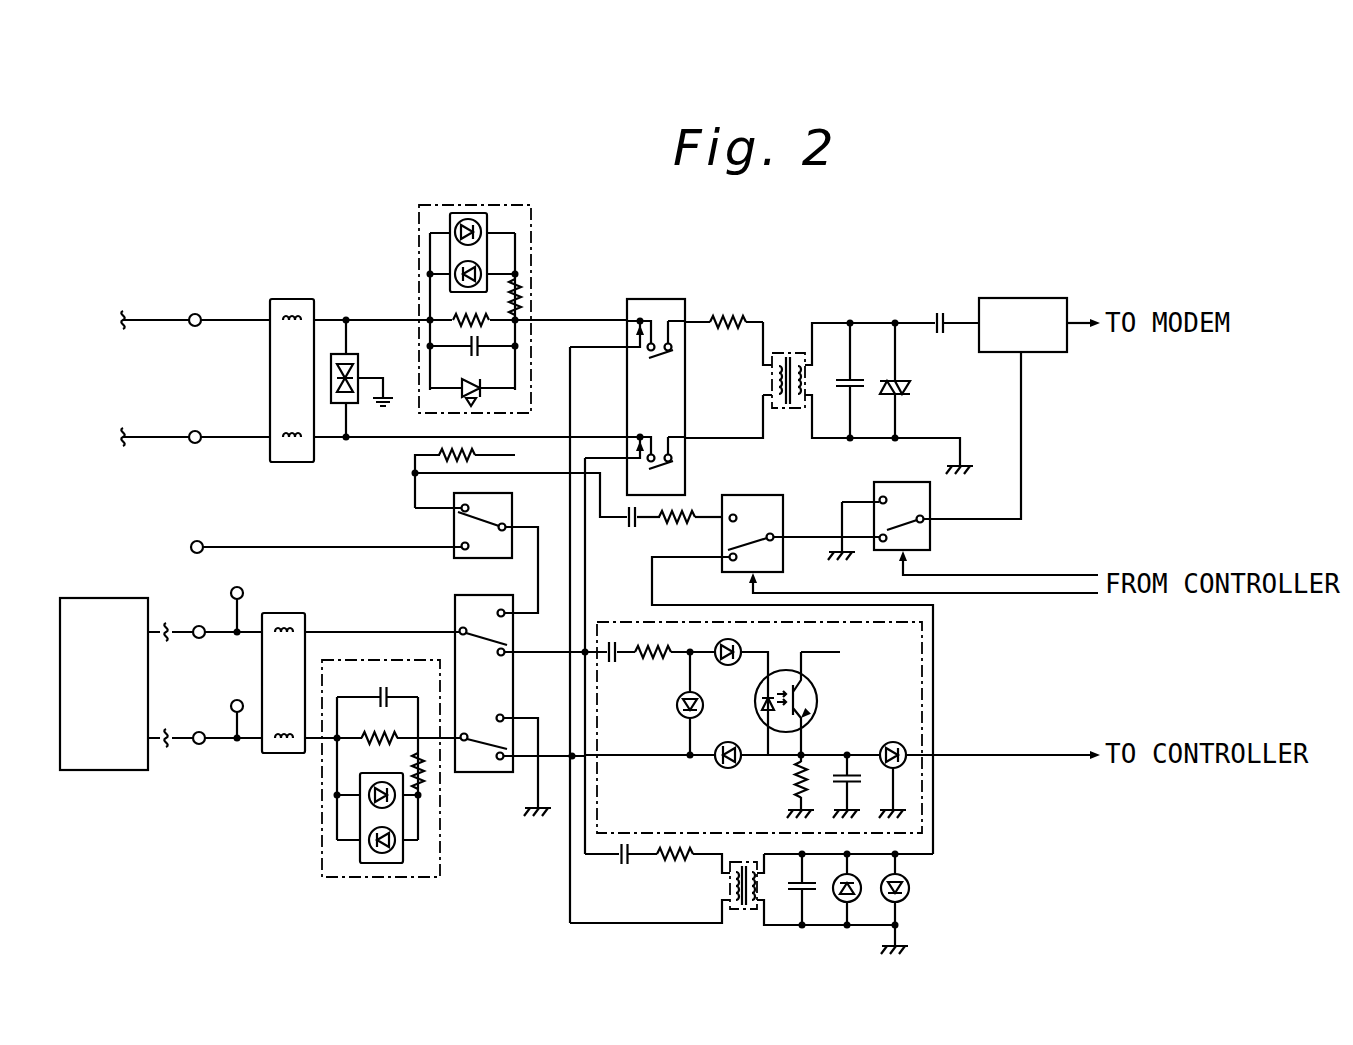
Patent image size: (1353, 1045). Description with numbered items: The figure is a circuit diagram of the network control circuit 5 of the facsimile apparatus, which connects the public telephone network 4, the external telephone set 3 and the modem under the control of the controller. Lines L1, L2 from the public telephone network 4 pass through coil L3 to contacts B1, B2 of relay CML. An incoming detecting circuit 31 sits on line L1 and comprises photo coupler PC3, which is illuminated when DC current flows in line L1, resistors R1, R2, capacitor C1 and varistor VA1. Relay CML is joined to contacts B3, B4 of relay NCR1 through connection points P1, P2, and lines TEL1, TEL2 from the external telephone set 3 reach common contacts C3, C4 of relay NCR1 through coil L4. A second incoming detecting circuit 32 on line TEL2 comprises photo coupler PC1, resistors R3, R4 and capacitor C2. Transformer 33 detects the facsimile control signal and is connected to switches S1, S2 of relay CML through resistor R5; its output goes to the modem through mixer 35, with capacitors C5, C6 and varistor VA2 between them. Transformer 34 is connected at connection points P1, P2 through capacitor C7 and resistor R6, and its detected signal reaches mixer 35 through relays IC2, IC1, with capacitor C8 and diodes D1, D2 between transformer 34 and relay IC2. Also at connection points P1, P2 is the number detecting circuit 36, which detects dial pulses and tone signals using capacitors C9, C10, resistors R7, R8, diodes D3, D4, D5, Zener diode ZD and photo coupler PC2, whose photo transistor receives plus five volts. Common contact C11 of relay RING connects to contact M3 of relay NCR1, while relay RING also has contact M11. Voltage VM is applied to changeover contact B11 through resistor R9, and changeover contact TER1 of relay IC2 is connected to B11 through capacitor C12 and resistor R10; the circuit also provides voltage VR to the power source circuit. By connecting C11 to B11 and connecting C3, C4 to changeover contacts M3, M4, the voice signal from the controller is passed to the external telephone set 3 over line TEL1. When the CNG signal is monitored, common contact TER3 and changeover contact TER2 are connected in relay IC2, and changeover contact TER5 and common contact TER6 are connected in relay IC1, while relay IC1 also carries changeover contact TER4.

The external telephone set 3 is at (120, 598).
The public telephone network 4 is at (142, 322).
The network control circuit 5 is at (946, 280).
The incoming detecting circuit 31 is at (482, 308).
The incoming detecting circuit 32 is at (377, 768).
The transformer 33 is at (790, 354).
The transformer 34 is at (738, 905).
The mixer 35 is at (1047, 298).
The number detecting circuit 36 is at (842, 727).
The line L1 is at (228, 318).
The line L2 is at (228, 435).
The coil L3 is at (293, 298).
The coil L4 is at (294, 613).
The resistor R1 is at (455, 316).
The resistor R2 is at (518, 301).
The resistor R3 is at (379, 744).
The resistor R4 is at (423, 780).
The resistor R5 is at (738, 318).
The resistor R6 is at (675, 860).
The resistor R7 is at (665, 662).
The resistor R8 is at (798, 780).
The resistor R9 is at (440, 455).
The resistor R10 is at (688, 525).
The capacitor C1 is at (482, 344).
The capacitor C2 is at (378, 691).
The common contact C3 is at (459, 630).
The common contact C4 is at (466, 733).
The capacitor C5 is at (856, 378).
The capacitor C6 is at (935, 318).
The capacitor C7 is at (620, 862).
The capacitor C8 is at (800, 895).
The capacitor C9 is at (617, 660).
The capacitor C10 is at (843, 770).
The common contact C11 is at (508, 526).
The capacitor C12 is at (630, 526).
The photo coupler PC1 is at (401, 857).
The photo coupler PC2 is at (813, 698).
The photo coupler PC3 is at (450, 218).
The varistor VA1 is at (465, 385).
The varistor VA2 is at (902, 381).
The relay CML is at (682, 300).
The contact B1 is at (640, 315).
The contact B2 is at (642, 433).
The contact B3 is at (500, 656).
The contact B4 is at (501, 760).
The changeover contact B11 is at (470, 507).
The changeover contact M3 is at (503, 609).
The changeover contact M4 is at (506, 714).
The contact M11 is at (461, 546).
The switch S1 is at (668, 356).
The switch S2 is at (669, 468).
The voltage VM is at (538, 455).
The relay RING is at (455, 512).
The voltage VR is at (179, 546).
The relay NCR1 is at (460, 602).
The line TEL1 is at (213, 630).
The line TEL2 is at (213, 736).
The connection point P1 is at (582, 650).
The connection point P2 is at (570, 752).
The relay IC1 is at (921, 522).
The relay IC2 is at (792, 653).
The changeover contact TER1 is at (735, 514).
The changeover contact TER2 is at (733, 561).
The common contact TER3 is at (773, 533).
The changeover contact TER4 is at (883, 496).
The changeover contact TER5 is at (882, 542).
The common contact TER6 is at (925, 524).
The diode D1 is at (841, 900).
The diode D2 is at (905, 895).
The diode D3 is at (681, 713).
The diode D4 is at (723, 666).
The diode D5 is at (890, 742).
The Zener diode ZD is at (729, 769).